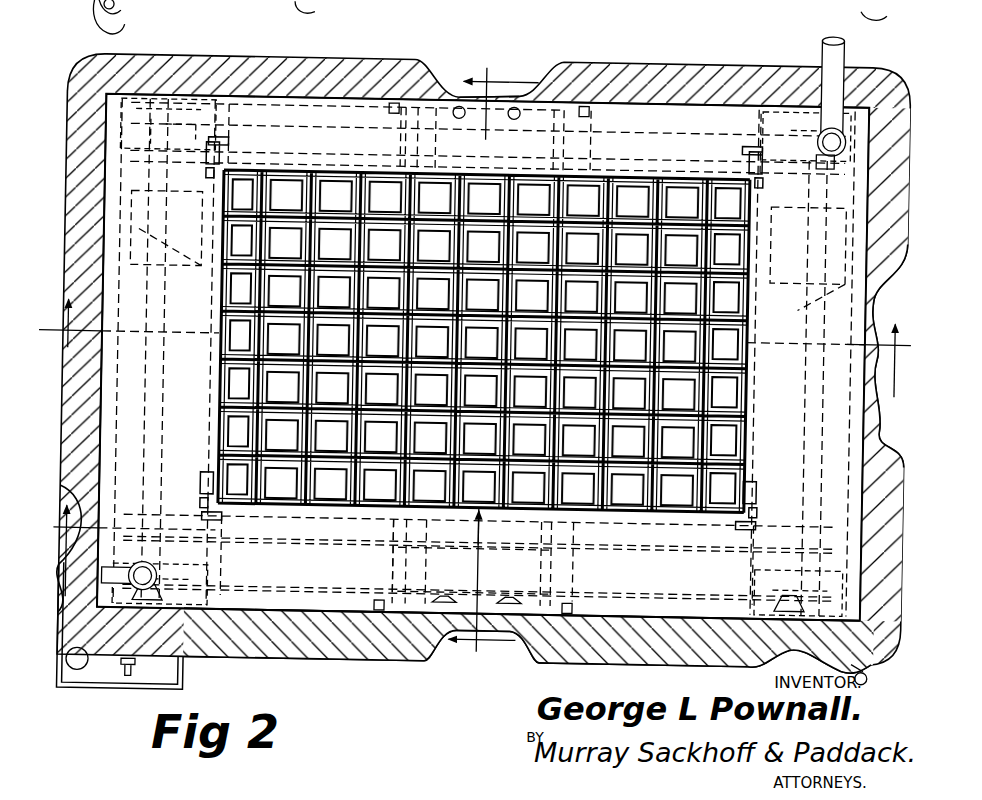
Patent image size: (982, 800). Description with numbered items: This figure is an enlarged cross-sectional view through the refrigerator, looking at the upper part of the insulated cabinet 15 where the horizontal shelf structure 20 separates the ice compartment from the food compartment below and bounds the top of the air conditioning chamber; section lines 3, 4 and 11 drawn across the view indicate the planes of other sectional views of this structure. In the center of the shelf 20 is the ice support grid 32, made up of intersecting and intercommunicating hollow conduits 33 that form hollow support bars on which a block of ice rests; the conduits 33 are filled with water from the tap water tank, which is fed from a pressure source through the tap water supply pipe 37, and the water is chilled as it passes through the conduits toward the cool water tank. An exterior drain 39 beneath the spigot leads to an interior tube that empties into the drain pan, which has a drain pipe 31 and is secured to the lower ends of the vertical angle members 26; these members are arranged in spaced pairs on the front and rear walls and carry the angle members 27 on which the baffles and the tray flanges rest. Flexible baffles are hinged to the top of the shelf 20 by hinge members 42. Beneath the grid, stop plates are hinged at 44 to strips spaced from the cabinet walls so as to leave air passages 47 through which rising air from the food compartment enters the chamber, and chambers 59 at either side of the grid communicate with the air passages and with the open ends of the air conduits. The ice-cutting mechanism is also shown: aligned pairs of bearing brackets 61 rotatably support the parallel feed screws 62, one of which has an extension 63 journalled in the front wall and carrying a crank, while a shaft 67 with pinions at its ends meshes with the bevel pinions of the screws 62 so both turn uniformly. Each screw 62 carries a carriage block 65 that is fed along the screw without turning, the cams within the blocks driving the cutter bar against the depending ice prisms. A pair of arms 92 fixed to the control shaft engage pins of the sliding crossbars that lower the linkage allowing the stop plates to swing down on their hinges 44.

The section line 3- 3 is at (475, 348).
The section line 4- 4 is at (493, 361).
The section line 11- 11 is at (251, 554).
The insulated cabinet 15 is at (710, 73).
The horizontal shelf structure 20 is at (648, 595).
The vertical angle members 26 is at (392, 97).
The angle members 27 is at (305, 529).
The drain pipe 31 is at (499, 95).
The ice support grid 32 is at (601, 206).
The hollow conduits 33 is at (681, 210).
The tap water supply pipe 37 is at (843, 39).
The exterior drain 39 is at (112, 690).
The hinge members 42 is at (213, 147).
The hinges of stop plates 44 is at (855, 291).
The air passages 47 is at (135, 333).
The chambers 59 is at (356, 130).
The bearing brackets 61 is at (195, 93).
The feed screws 62 is at (167, 394).
The extension 63 is at (826, 651).
The carriage block 65 is at (151, 249).
The shaft 67 is at (276, 124).
The arms 92 is at (469, 95).